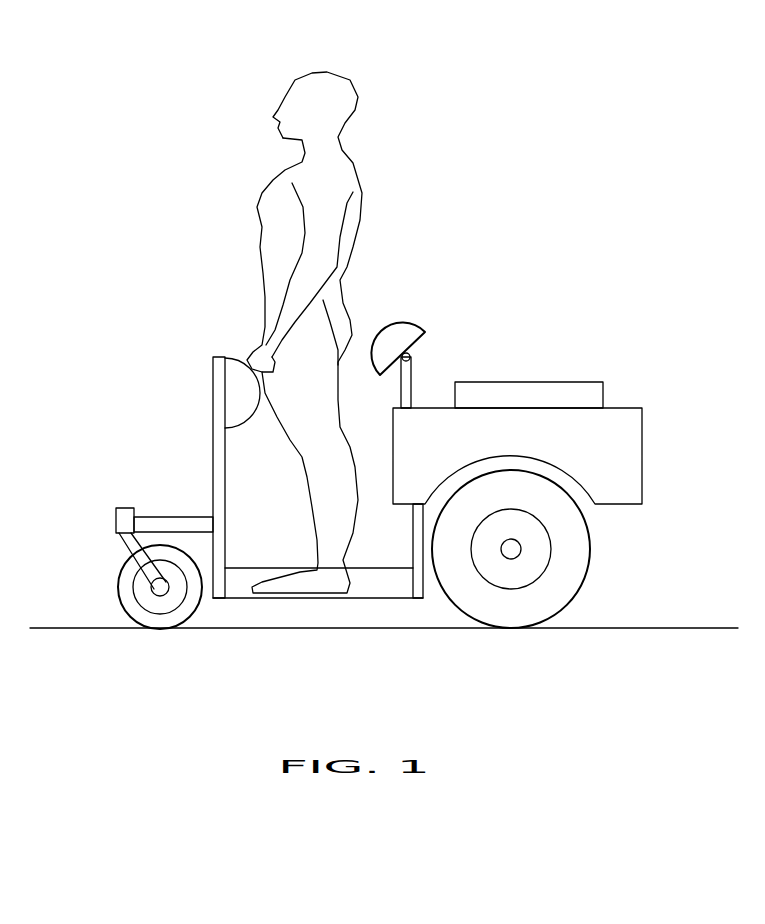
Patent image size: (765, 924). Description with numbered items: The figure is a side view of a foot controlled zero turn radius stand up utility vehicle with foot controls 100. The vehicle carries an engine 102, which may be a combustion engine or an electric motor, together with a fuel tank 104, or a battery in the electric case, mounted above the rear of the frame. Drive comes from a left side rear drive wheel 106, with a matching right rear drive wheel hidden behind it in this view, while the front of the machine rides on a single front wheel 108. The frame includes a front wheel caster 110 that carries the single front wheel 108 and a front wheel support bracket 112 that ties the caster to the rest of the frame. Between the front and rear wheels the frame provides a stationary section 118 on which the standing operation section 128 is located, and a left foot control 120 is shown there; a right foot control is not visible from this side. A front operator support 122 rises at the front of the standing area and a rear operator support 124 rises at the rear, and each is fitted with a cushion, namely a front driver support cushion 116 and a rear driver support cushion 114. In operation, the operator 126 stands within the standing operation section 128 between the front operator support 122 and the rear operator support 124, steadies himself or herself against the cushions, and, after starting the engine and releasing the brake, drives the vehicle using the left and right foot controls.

The stand up zero turn utility vehicle with foot controls 100 is at (107, 273).
The engine 102 is at (526, 382).
The fuel tank 104 is at (617, 408).
The left side rear drive wheel 106 is at (590, 567).
The single front wheel 108 is at (118, 585).
The front wheel caster 110 is at (117, 508).
The front wheel support bracket 112 is at (180, 517).
The rear driver support cushion 114 is at (422, 330).
The front driver support cushion 116 is at (240, 425).
The stationary section 118 is at (292, 568).
The left foot control 120 is at (393, 598).
The front operator support 122 is at (211, 381).
The rear operator support 124 is at (412, 385).
The operator 126 is at (370, 92).
The standing operation section 128 is at (295, 607).